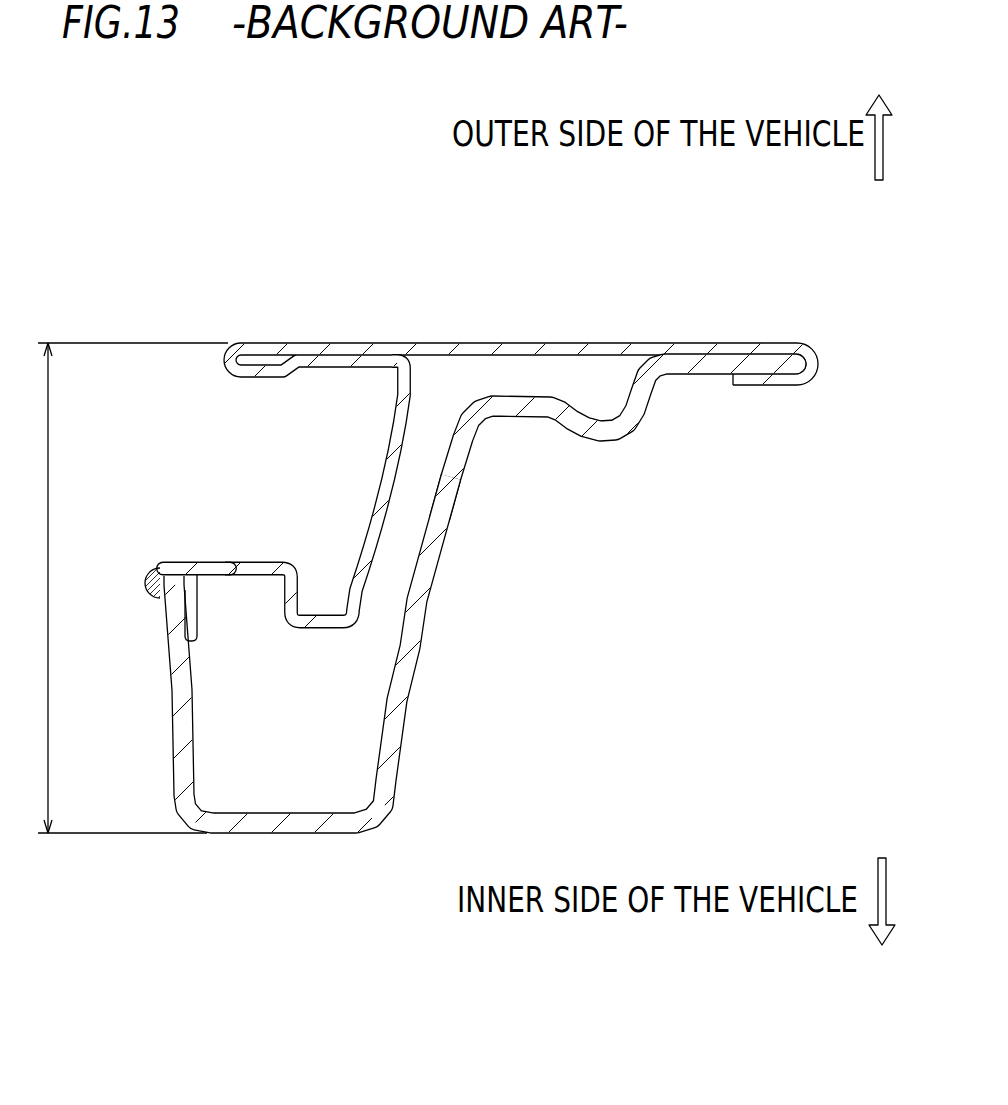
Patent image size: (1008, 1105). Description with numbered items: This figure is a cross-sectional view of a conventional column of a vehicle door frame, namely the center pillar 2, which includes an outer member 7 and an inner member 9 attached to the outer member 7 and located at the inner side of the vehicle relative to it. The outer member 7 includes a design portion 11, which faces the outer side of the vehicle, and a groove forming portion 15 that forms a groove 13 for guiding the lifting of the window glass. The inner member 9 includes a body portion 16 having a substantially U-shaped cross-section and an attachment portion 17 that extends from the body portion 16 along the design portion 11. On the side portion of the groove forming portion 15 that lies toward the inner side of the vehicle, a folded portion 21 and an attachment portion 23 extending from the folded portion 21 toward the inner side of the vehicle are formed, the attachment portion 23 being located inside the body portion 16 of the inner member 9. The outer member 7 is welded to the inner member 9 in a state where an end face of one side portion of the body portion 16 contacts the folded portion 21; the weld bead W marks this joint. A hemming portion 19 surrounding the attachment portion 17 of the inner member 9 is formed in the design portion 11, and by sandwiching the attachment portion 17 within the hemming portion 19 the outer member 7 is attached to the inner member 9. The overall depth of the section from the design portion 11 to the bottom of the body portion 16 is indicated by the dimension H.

The center pillar 2 is at (540, 299).
The outer member 7 is at (752, 343).
The inner member 9 is at (416, 732).
The design portion 11 is at (437, 343).
The groove 13 is at (470, 627).
The groove forming portion 15 is at (367, 562).
The body portion 16 is at (290, 837).
The attachment portion 17 is at (703, 370).
The hemming portion 19 is at (817, 352).
The folded portion 21 is at (182, 560).
The attachment portion 23 is at (201, 600).
The weld bead W is at (155, 560).
The height of inner panel H is at (133, 588).